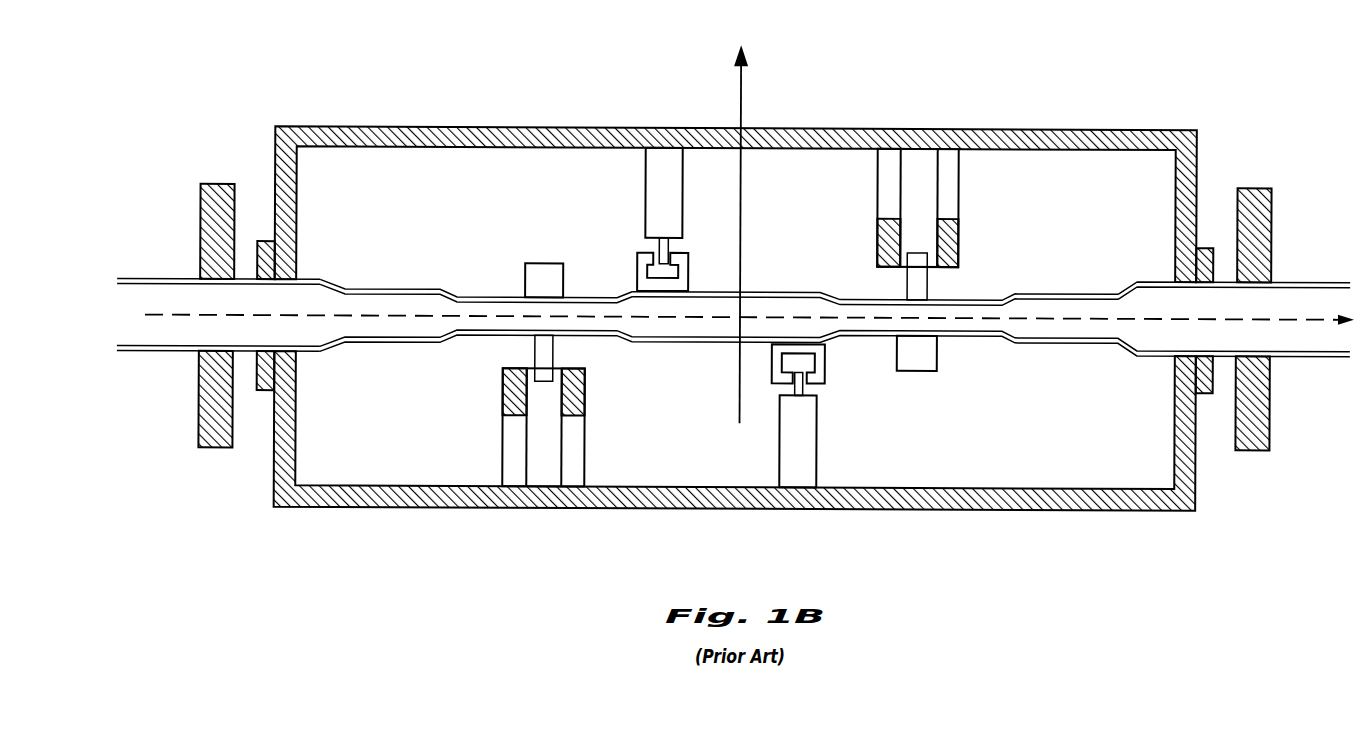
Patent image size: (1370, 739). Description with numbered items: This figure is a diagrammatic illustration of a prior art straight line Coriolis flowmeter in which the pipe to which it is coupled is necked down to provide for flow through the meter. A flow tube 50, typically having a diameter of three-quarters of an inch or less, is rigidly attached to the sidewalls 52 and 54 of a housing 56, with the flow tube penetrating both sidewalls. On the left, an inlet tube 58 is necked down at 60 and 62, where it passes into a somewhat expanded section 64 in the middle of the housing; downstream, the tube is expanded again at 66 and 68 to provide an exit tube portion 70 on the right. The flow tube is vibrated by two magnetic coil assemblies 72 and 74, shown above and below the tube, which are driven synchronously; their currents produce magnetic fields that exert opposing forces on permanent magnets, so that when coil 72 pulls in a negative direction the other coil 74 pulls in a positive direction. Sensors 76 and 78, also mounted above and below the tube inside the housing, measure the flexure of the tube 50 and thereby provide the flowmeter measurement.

The flow tube 50 is at (370, 290).
The sidewall 52 is at (297, 194).
The sidewall 54 is at (1196, 171).
The housing 56 is at (512, 128).
The inlet tube 58 is at (148, 281).
The necked down portion 60 is at (125, 281).
The necked down portion 62 is at (446, 293).
The expanded section 64 is at (745, 292).
The expanded portion 66 is at (1073, 293).
The expanded portion 68 is at (1133, 281).
The exit tube portion 70 is at (1286, 280).
The magnetic coil assembly 72 is at (958, 229).
The magnetic coil assembly 74 is at (503, 391).
The sensor 76 is at (637, 263).
The sensor 78 is at (826, 365).